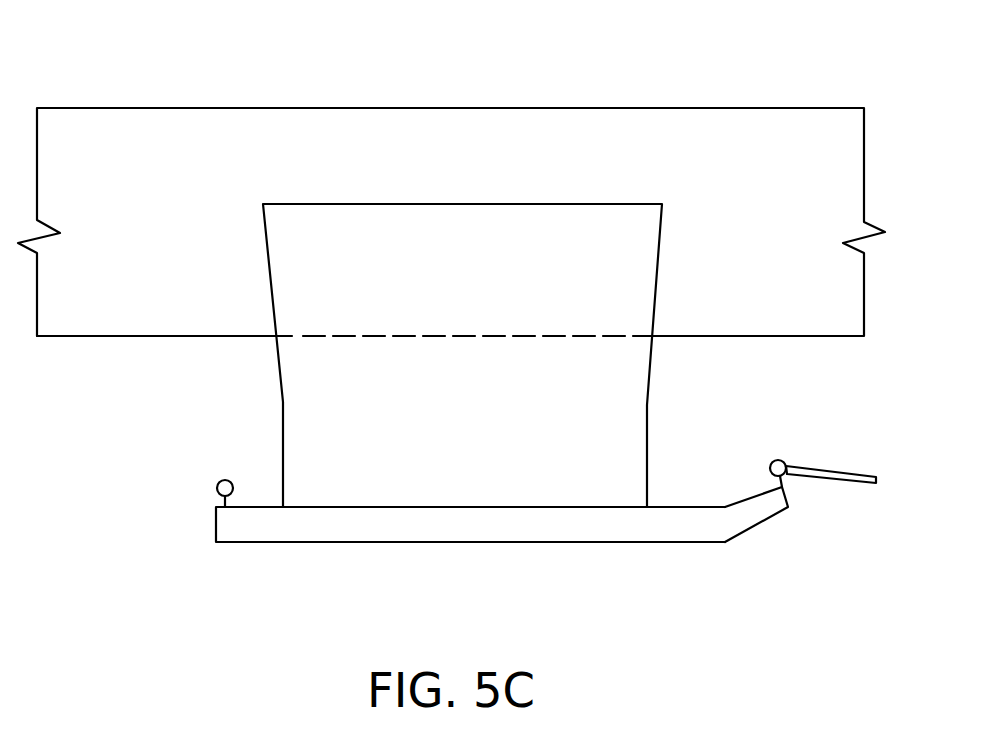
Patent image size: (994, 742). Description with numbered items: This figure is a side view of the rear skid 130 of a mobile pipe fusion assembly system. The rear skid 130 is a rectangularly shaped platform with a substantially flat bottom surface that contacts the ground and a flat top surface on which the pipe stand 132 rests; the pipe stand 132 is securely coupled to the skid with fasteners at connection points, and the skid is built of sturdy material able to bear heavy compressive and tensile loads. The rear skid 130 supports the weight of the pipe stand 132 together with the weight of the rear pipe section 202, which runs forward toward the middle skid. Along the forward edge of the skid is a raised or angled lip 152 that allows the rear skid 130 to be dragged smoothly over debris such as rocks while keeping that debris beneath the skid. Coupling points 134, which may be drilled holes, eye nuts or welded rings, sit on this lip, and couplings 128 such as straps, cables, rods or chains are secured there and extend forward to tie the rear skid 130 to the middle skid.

The rear pipe section 202 is at (742, 120).
The pipe stand 132 is at (370, 232).
The rear skid 130 is at (318, 543).
The raised or angled lip 152 is at (750, 513).
The coupling points 134 is at (783, 462).
The couplings 128 is at (847, 469).